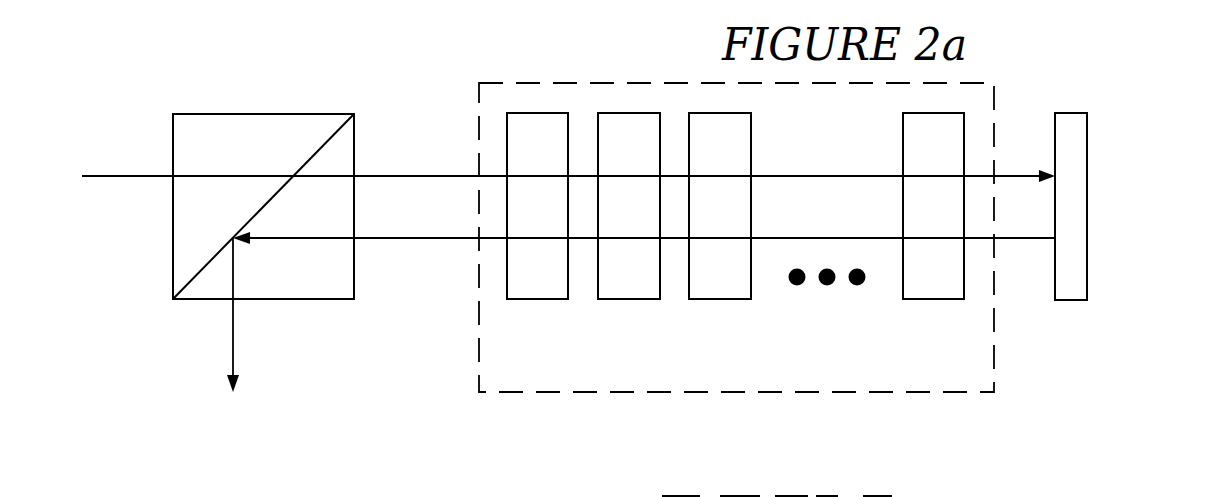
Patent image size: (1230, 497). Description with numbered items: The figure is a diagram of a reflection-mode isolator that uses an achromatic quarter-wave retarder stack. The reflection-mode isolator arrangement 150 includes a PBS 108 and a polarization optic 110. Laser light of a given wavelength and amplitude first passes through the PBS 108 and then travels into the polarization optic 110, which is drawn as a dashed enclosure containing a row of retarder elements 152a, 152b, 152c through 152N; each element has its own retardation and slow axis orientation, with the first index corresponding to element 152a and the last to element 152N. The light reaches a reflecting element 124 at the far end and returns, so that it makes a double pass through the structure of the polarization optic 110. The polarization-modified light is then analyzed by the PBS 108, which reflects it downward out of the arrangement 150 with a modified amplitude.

The PBS 108 is at (205, 113).
The polarization optic 110 is at (988, 381).
The mirror 124 is at (1087, 143).
The reflection-mode isolator arrangement 150 is at (336, 411).
The first element 152a is at (560, 233).
The second element 152b is at (606, 233).
The third element 152c is at (698, 233).
The Nth element 152N is at (909, 233).